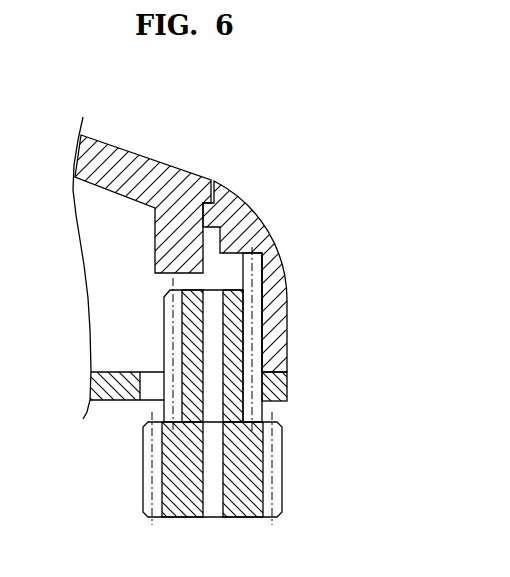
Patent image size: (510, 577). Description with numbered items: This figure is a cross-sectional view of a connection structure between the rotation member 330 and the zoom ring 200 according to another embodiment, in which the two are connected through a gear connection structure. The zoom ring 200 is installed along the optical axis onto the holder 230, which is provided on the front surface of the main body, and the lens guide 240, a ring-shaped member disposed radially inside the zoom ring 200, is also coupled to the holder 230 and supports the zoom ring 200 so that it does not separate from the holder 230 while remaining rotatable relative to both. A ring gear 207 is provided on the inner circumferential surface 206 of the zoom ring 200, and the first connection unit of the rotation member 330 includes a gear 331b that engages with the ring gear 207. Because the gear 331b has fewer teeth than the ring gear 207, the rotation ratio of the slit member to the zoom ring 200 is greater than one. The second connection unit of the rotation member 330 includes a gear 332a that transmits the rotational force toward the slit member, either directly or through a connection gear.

The lens guide 240 is at (153, 156).
The zoom ring 200 is at (266, 222).
The inner circumferential surface 206 is at (263, 278).
The ring gear 207 is at (255, 302).
The holder 230 is at (123, 401).
The rotation member 330 is at (278, 401).
The gear 331b is at (257, 413).
The gear 332a is at (273, 481).